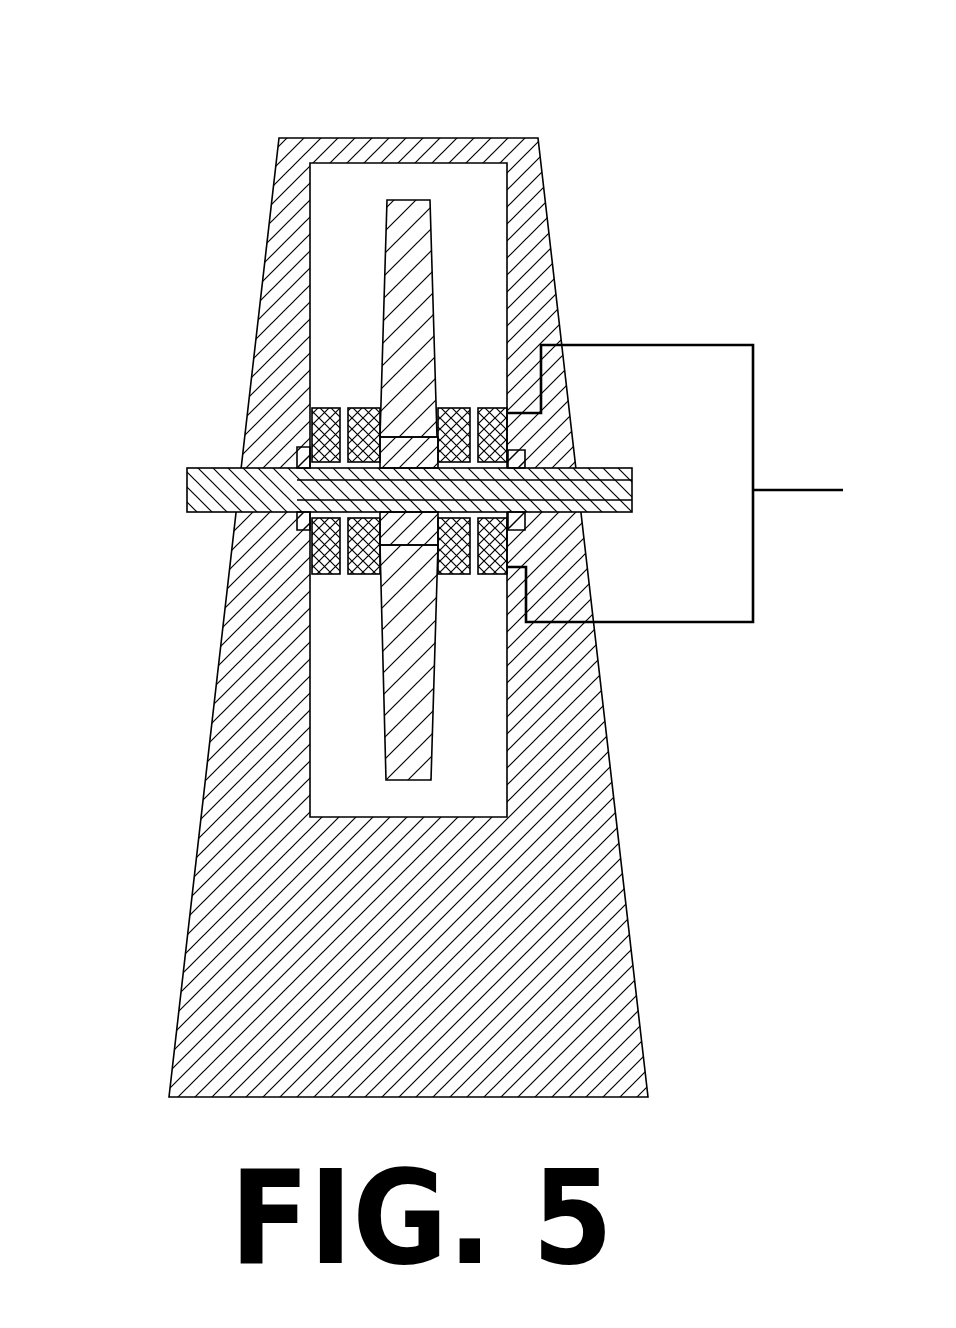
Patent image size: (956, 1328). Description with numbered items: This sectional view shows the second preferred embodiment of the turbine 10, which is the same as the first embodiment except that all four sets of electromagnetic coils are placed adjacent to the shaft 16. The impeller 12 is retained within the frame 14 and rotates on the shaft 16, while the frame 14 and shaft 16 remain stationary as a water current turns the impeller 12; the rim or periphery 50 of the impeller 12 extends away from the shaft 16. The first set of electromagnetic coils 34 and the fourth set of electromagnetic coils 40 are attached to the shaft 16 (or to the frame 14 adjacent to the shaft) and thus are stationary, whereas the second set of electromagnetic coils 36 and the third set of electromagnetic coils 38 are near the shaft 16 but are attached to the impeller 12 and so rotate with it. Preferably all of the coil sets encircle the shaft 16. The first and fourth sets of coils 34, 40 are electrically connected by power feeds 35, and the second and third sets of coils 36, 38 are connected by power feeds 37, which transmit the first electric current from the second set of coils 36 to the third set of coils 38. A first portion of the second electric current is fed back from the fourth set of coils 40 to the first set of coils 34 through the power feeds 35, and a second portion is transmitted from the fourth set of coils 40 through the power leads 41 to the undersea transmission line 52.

The turbine 10 is at (277, 138).
The impeller 12 is at (293, 493).
The frame 14 is at (203, 795).
The shaft 16 is at (187, 488).
The first set of electromagnetic coils 34 is at (312, 430).
The power feeds 35 is at (530, 497).
The second set of electromagnetic coils 36 is at (350, 405).
The power feeds 37 is at (398, 437).
The third set of electromagnetic coils 38 is at (460, 407).
The fourth set of electromagnetic coils 40 is at (515, 432).
The power leads 41 is at (657, 343).
The rim or periphery 50 is at (408, 200).
The undersea transmission line 52 is at (800, 490).